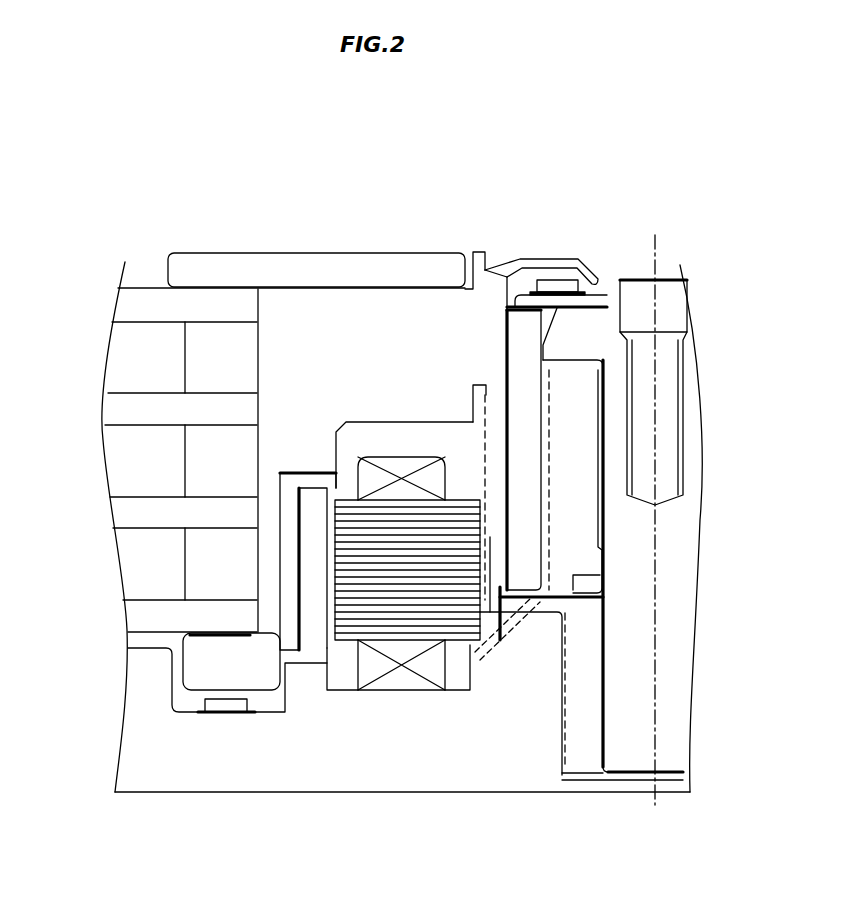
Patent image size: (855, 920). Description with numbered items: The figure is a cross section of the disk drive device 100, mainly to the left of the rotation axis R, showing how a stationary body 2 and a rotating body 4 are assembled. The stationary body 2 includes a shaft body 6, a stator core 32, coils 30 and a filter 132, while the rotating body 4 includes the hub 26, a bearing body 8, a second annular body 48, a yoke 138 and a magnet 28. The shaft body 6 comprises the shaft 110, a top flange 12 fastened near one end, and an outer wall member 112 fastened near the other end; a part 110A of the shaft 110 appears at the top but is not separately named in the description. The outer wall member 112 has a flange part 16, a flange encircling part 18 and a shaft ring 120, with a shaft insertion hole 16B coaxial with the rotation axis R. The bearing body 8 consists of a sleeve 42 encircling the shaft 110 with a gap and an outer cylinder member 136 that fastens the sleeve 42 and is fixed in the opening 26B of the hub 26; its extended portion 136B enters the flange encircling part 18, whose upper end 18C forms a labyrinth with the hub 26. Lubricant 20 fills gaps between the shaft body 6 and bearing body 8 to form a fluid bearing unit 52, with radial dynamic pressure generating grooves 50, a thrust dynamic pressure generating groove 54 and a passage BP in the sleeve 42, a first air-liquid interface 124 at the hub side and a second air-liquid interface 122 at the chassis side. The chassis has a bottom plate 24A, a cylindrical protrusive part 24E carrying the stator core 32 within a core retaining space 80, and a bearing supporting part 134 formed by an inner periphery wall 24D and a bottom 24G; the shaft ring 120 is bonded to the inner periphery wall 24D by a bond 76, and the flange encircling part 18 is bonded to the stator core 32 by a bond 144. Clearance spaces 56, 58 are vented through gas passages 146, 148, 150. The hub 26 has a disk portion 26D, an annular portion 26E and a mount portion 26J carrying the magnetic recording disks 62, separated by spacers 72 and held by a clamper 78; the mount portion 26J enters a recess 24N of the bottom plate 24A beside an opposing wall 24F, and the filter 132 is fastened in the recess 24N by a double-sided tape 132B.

The stationary body 2 is at (337, 775).
The rotating body 4 is at (418, 320).
The shaft body 6 is at (637, 262).
The bearing body 8 is at (790, 478).
The top flange 12 is at (575, 322).
The flange part 16 is at (563, 680).
The shaft insertion hole 16B is at (592, 684).
The flange encircling part 18 is at (540, 650).
The upper end 18C is at (495, 375).
The lubricant 20 is at (600, 493).
The bottom plate 24A is at (138, 782).
The inner periphery wall 24D is at (572, 782).
The protrusive part 24E is at (540, 627).
The opposing wall 24F is at (300, 700).
The bottom 24G is at (670, 785).
The recess 24N is at (183, 714).
The hub 26 is at (293, 310).
The opening 26B is at (505, 312).
The disk portion 26D is at (368, 320).
The annular portion 26E is at (270, 528).
The mount portion 26J is at (205, 660).
The magnet 28 is at (306, 520).
The coils 30 is at (403, 615).
The stator core 32 is at (430, 660).
The sleeve 42 is at (577, 448).
The second annular body 48 is at (507, 330).
The radial dynamic pressure generating grooves 50 is at (575, 410).
The fluid bearing unit 52 is at (613, 315).
The thrust dynamic pressure generating groove 54 is at (605, 395).
The clearance space 56 is at (670, 782).
The clearance space 58 is at (530, 660).
The magnetic recording disks 62 is at (150, 300).
The spacers 72 is at (200, 358).
The bond 76 is at (565, 738).
The clamper 78 is at (220, 268).
The core retaining space 80 is at (357, 440).
The disk drive device 100 is at (316, 184).
The shaft 110 is at (662, 762).
The bolt head 110A is at (668, 300).
The outer wall member 112 is at (592, 680).
The shaft ring 120 is at (605, 782).
The second air-liquid interface 122 is at (495, 372).
The first air-liquid interface 124 is at (543, 322).
The filter 132 is at (240, 714).
The double-sided tape 132B is at (220, 714).
The bearing supporting part 134 is at (588, 782).
The outer cylinder member 136 is at (527, 348).
The extended portion 136B is at (525, 563).
The yoke 138 is at (280, 628).
The bond 144 is at (490, 535).
The gas passage 146 is at (565, 703).
The gas passage 148 is at (472, 405).
The gas passage 150 is at (500, 645).
The rotation axis R is at (655, 506).
The passage BP is at (547, 523).